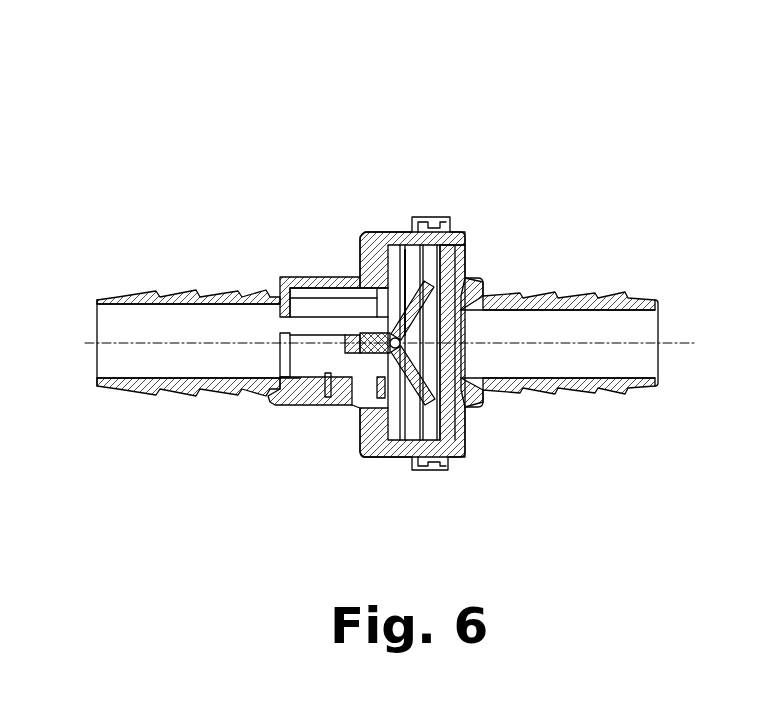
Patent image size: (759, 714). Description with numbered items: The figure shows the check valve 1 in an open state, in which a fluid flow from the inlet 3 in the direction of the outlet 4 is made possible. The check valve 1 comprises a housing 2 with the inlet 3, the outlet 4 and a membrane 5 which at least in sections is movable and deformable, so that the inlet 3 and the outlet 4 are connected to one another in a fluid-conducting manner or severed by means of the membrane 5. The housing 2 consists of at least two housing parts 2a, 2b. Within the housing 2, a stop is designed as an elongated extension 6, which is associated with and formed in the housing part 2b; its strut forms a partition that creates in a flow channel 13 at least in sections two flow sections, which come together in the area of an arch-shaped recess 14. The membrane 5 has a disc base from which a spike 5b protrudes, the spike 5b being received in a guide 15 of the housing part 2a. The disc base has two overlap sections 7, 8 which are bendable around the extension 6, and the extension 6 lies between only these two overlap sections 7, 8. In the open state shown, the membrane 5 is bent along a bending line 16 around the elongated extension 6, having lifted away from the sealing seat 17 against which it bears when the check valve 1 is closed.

The check valve 1 is at (128, 168).
The housing 2 is at (150, 290).
The housing part 2a is at (315, 385).
The housing part 2b is at (453, 433).
The inlet 3 is at (213, 348).
The outlet 4 is at (615, 343).
The membrane 5 is at (400, 310).
The spike 5b is at (378, 338).
The elongated extension 6 is at (425, 335).
The overlap section 7 is at (400, 310).
The overlap section 8 is at (420, 400).
The flow channel 13 is at (480, 342).
The arch-shaped recess 14 is at (448, 342).
The guide 15 is at (342, 345).
The bending line 16 is at (405, 345).
The sealing seat 17 is at (380, 403).